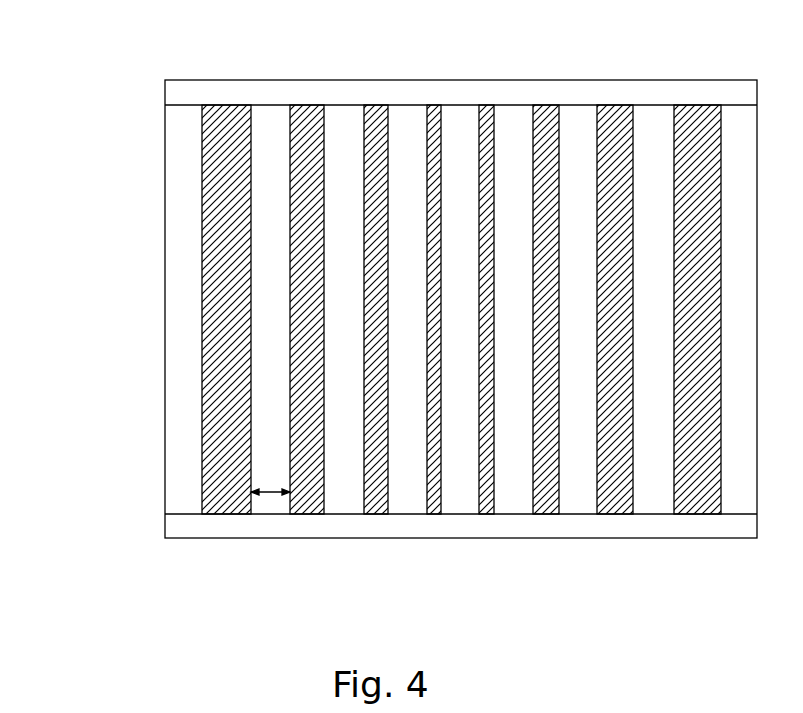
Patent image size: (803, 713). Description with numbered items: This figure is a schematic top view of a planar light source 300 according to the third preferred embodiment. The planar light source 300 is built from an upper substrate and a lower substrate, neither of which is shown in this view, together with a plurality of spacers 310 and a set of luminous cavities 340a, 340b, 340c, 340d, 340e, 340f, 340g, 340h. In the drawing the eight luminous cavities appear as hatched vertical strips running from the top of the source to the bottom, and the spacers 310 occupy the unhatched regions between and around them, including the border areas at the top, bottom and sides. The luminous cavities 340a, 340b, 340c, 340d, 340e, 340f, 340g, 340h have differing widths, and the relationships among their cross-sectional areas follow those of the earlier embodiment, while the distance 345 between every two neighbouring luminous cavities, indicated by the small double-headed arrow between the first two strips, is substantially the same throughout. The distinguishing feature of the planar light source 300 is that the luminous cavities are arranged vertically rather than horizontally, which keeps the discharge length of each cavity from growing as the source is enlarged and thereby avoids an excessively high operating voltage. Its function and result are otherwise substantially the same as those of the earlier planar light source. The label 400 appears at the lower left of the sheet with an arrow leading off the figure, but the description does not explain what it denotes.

The planar light source 300 is at (105, 138).
The spacers 310 is at (267, 118).
The luminous cavity 340a is at (223, 498).
The luminous cavity 340b is at (307, 498).
The luminous cavity 340c is at (377, 497).
The luminous cavity 340d is at (437, 497).
The luminous cavity 340e is at (490, 497).
The luminous cavity 340f is at (545, 497).
The luminous cavity 340g is at (620, 497).
The luminous cavity 340h is at (690, 497).
The distance 345 is at (267, 494).
The structure of next figure 400 is at (105, 704).